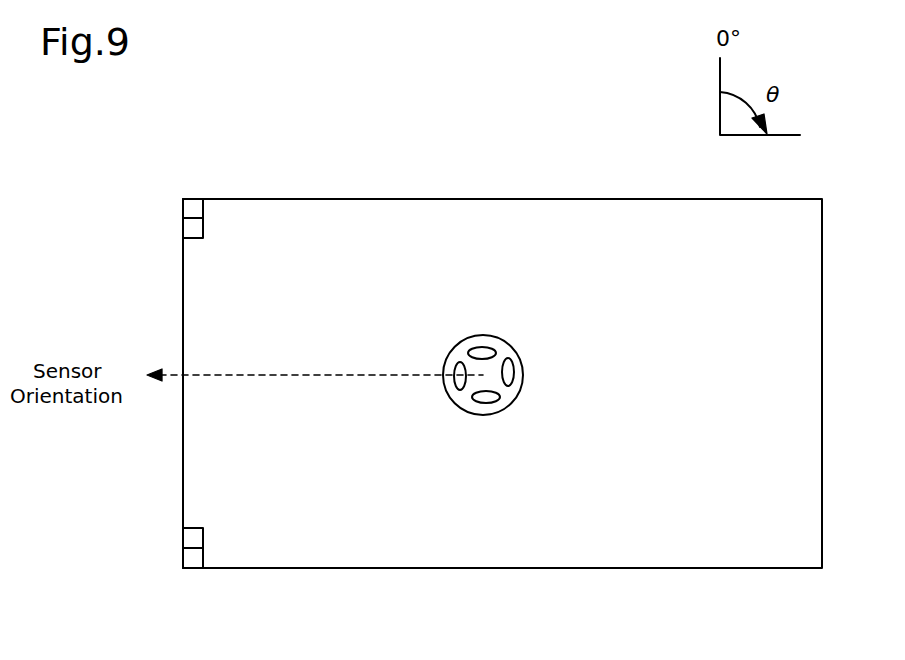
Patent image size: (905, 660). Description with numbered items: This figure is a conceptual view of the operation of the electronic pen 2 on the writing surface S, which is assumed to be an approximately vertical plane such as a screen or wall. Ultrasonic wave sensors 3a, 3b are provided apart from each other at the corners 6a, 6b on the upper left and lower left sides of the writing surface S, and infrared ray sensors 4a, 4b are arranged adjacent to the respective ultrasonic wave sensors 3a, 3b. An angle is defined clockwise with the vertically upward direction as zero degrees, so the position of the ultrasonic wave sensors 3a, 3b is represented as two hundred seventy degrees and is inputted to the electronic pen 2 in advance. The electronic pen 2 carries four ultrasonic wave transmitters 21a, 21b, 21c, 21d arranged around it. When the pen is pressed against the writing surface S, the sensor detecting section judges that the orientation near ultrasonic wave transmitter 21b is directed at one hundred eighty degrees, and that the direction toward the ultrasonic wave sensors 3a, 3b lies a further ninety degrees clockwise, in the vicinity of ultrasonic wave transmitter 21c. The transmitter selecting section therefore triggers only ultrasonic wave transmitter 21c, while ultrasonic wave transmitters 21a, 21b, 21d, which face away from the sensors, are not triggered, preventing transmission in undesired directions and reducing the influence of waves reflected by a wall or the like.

The writing surface S is at (505, 199).
The electronic pen 2 is at (470, 414).
The ultrasonic wave transmitter 21a is at (514, 365).
The ultrasonic wave transmitter 21b is at (490, 405).
The ultrasonic wave transmitter 21c is at (454, 384).
The ultrasonic wave transmitter 21d is at (478, 345).
The ultrasonic wave sensor 3a is at (200, 198).
The ultrasonic wave sensor 3b is at (195, 570).
The infrared ray sensor 4a is at (183, 230).
The infrared ray sensor 4b is at (183, 538).
The corner 6a is at (168, 193).
The corner 6b is at (178, 577).